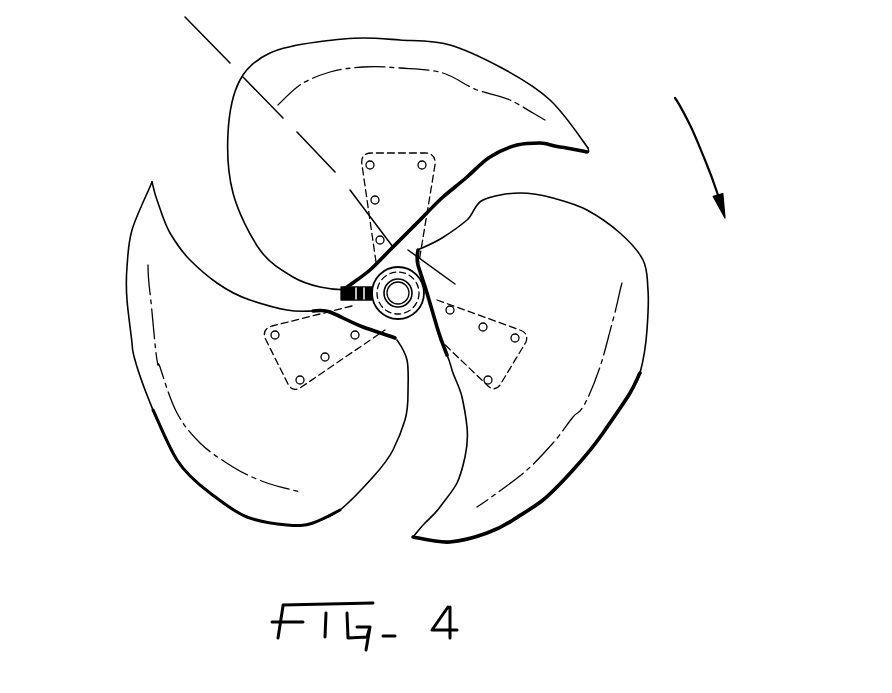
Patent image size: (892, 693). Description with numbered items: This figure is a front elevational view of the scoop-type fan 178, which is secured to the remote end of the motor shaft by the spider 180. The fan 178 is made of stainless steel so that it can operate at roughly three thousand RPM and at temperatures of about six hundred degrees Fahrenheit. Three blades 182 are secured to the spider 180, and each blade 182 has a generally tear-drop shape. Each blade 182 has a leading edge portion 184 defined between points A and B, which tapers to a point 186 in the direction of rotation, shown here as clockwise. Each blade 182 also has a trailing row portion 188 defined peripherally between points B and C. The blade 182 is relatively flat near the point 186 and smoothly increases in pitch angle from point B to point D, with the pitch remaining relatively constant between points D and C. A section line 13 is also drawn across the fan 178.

The section line 13- 13 is at (197, 13).
The scoop-type fan 178 is at (588, 88).
The spider 180 is at (495, 287).
The blade 182 is at (387, 83).
The leading edge portion 184 is at (515, 136).
The point 186 is at (590, 155).
The trailing row portion 188 is at (312, 67).